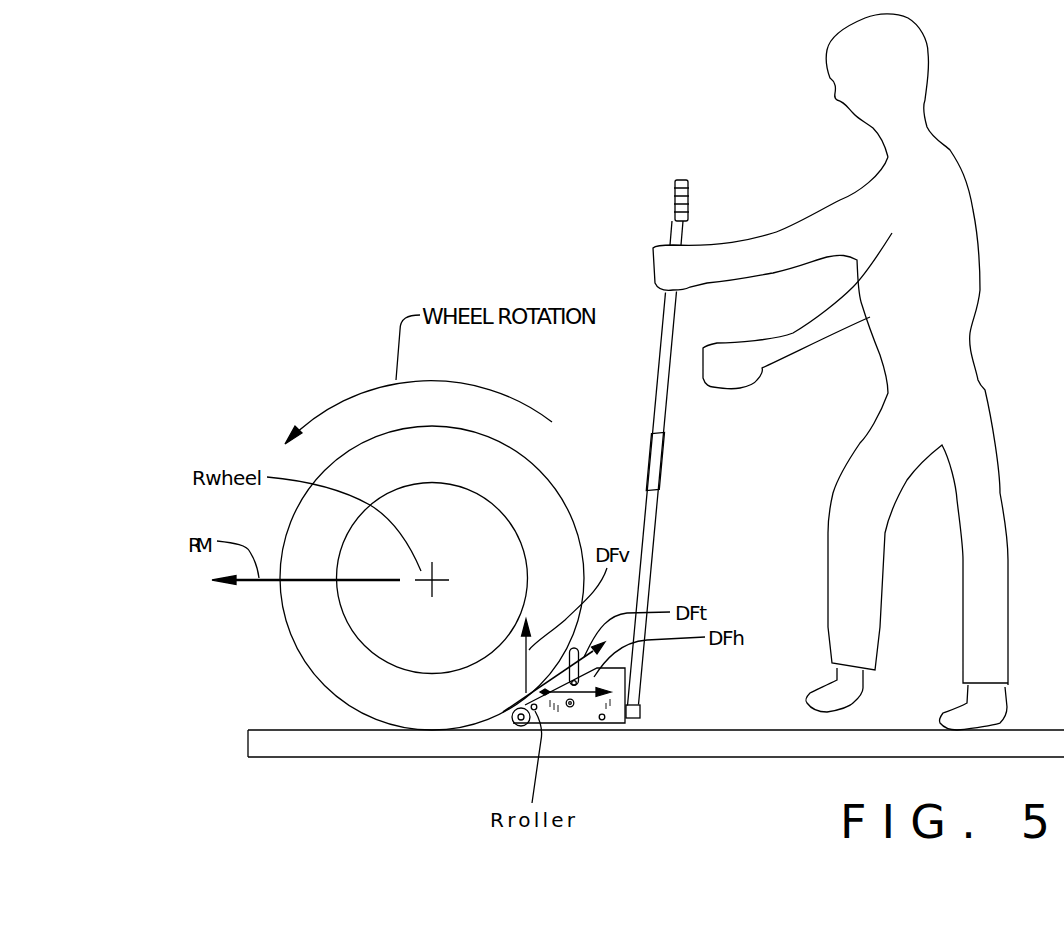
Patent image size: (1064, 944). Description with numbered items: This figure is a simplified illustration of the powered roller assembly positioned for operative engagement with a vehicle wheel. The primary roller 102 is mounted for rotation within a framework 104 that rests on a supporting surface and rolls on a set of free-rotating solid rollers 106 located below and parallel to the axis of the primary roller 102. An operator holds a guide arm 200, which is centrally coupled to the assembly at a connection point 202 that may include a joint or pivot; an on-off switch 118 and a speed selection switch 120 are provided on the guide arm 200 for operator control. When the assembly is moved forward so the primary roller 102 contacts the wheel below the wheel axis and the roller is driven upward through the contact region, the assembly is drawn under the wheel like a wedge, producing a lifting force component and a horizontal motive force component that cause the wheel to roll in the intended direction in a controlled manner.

The primary roller 102 is at (525, 695).
The framework 104 is at (568, 712).
The free-rotating solid rollers 106 is at (513, 723).
The on-off switch 118 is at (672, 221).
The speed selection switch 120 is at (673, 192).
The guide arm 200 is at (658, 500).
The connection point 202 is at (641, 710).